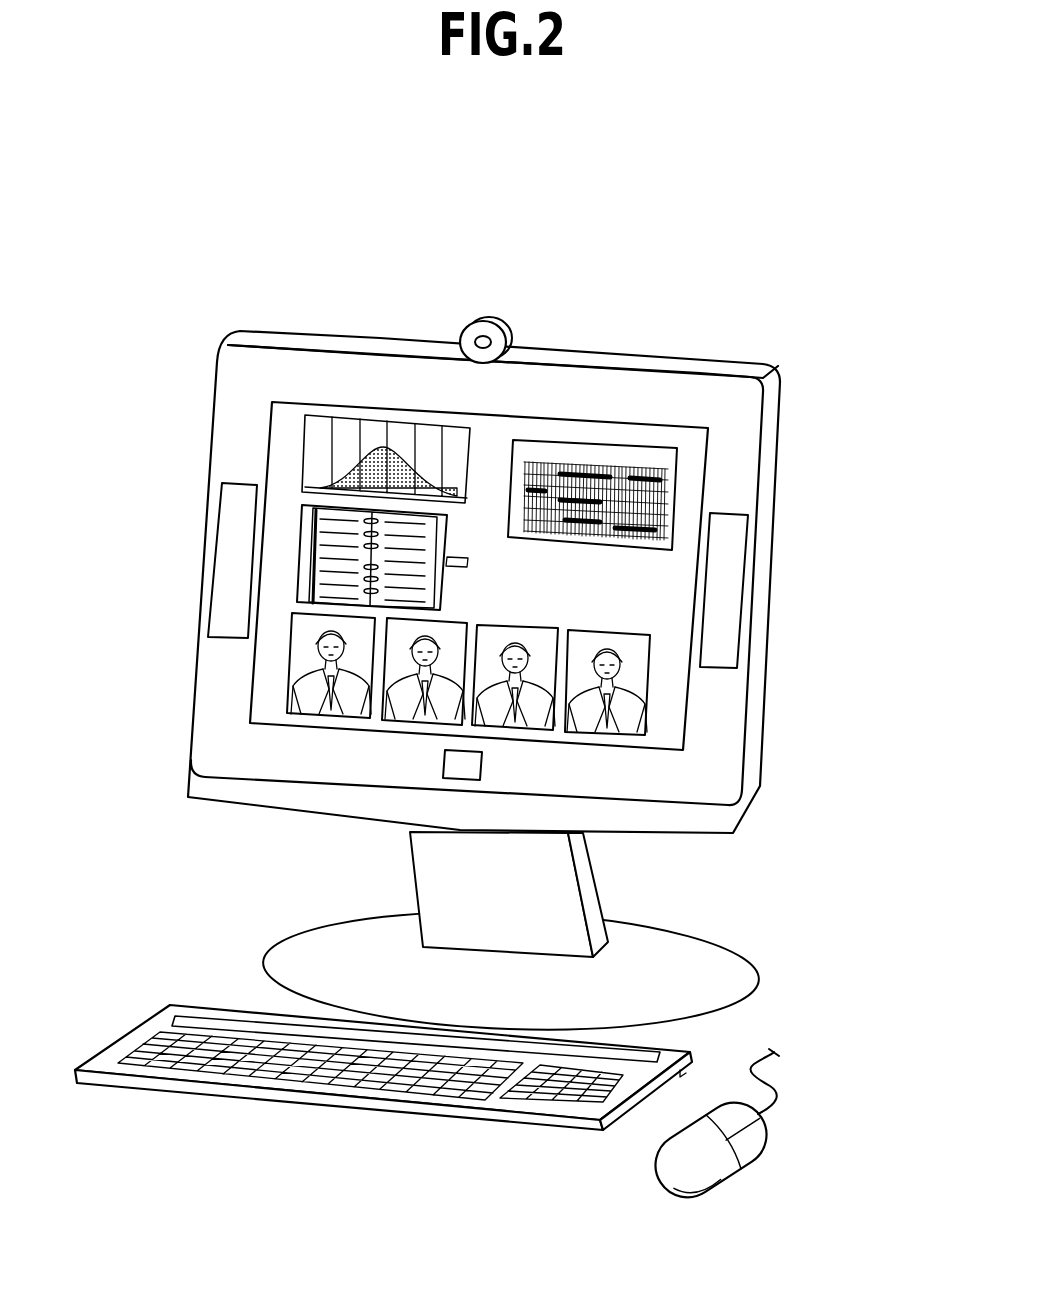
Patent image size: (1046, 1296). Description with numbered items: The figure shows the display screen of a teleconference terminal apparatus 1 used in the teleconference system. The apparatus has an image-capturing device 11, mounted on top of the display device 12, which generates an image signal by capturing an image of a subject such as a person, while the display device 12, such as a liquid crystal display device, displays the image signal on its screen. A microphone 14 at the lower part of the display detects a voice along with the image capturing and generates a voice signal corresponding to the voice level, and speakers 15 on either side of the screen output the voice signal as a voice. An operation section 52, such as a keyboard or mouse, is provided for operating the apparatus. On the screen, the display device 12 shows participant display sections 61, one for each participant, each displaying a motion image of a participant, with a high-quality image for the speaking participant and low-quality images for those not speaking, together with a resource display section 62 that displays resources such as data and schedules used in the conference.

The teleconference terminal apparatus 1 is at (568, 220).
The image-capturing device 11 is at (477, 328).
The display device 12 is at (697, 455).
The microphone 14 is at (450, 773).
The speaker 15 is at (230, 550).
The operation section 52 is at (377, 1107).
The participant display section 61 is at (393, 713).
The resource display section 62 is at (603, 447).